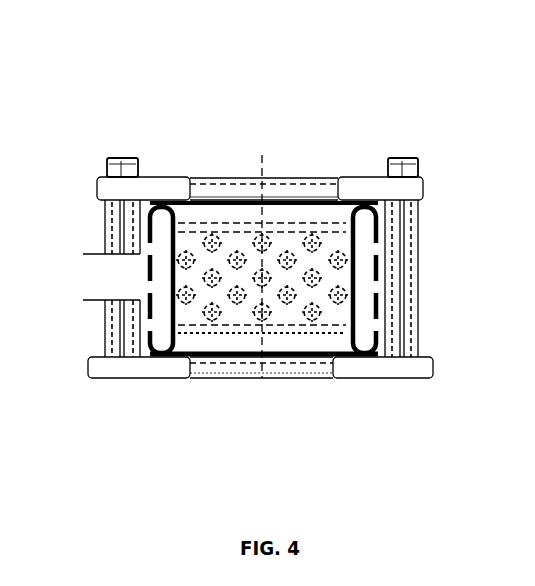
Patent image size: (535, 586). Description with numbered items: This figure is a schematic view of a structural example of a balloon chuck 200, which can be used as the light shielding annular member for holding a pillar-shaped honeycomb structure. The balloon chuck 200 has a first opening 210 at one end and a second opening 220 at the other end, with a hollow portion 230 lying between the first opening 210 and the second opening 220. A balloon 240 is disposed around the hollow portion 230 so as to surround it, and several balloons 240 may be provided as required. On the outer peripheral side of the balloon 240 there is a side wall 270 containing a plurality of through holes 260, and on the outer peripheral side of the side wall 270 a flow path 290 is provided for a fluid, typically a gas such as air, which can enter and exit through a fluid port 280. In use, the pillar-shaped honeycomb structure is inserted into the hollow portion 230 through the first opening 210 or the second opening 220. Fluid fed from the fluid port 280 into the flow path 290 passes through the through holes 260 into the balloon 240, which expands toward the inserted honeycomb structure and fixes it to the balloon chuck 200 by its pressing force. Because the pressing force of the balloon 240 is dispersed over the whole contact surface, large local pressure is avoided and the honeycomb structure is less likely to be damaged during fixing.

The balloon chuck 200 is at (139, 131).
The first opening 210 is at (291, 193).
The second opening 220 is at (297, 368).
The hollow portion 230 is at (236, 246).
The balloon 240 is at (353, 275).
The through holes 260 is at (313, 240).
The side wall 270 is at (194, 215).
The fluid port 280 is at (85, 300).
The flow path 290 is at (380, 222).